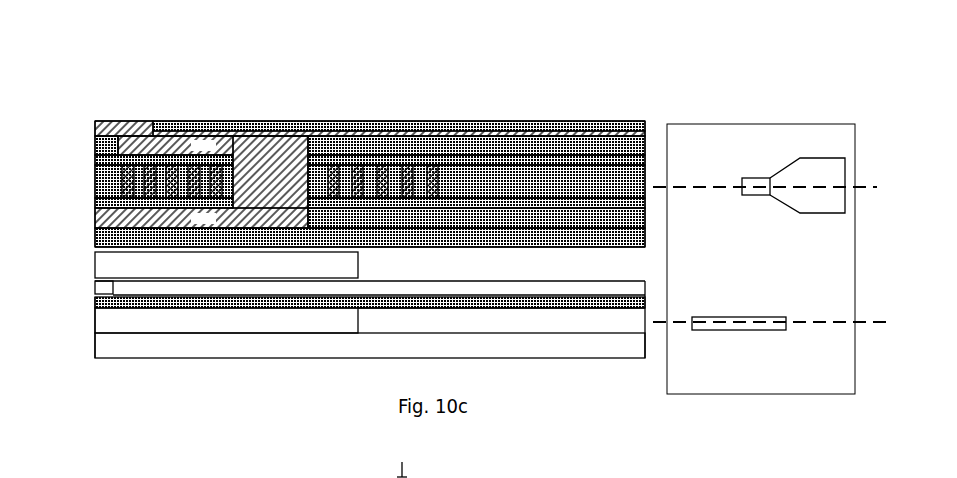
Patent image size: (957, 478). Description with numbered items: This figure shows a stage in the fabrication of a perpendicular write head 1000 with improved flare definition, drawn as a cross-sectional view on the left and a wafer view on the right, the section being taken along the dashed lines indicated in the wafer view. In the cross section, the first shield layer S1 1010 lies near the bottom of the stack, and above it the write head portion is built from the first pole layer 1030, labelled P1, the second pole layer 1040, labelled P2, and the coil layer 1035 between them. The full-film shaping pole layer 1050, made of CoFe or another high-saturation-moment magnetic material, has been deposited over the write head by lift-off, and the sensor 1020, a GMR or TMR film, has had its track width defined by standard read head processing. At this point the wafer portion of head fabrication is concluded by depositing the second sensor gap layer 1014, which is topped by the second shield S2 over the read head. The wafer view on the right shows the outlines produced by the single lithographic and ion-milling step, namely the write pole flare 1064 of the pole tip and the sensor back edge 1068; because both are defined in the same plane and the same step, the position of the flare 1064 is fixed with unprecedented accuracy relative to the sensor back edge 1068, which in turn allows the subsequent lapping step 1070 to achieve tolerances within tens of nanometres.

The perpendicular write head 1000 is at (497, 105).
The shaping pole layer 1050 is at (117, 121).
The first pole layer 1030 is at (118, 207).
The coil layer 1035 is at (173, 165).
The second pole layer 1040 is at (272, 135).
The second sensor gap layer 1014 is at (110, 265).
The first shield layer 1010 is at (308, 322).
The sensor 1020 is at (345, 358).
The lapping step 1070 is at (420, 477).
The write pole flare 1064 is at (770, 180).
The sensor back edge 1068 is at (786, 330).